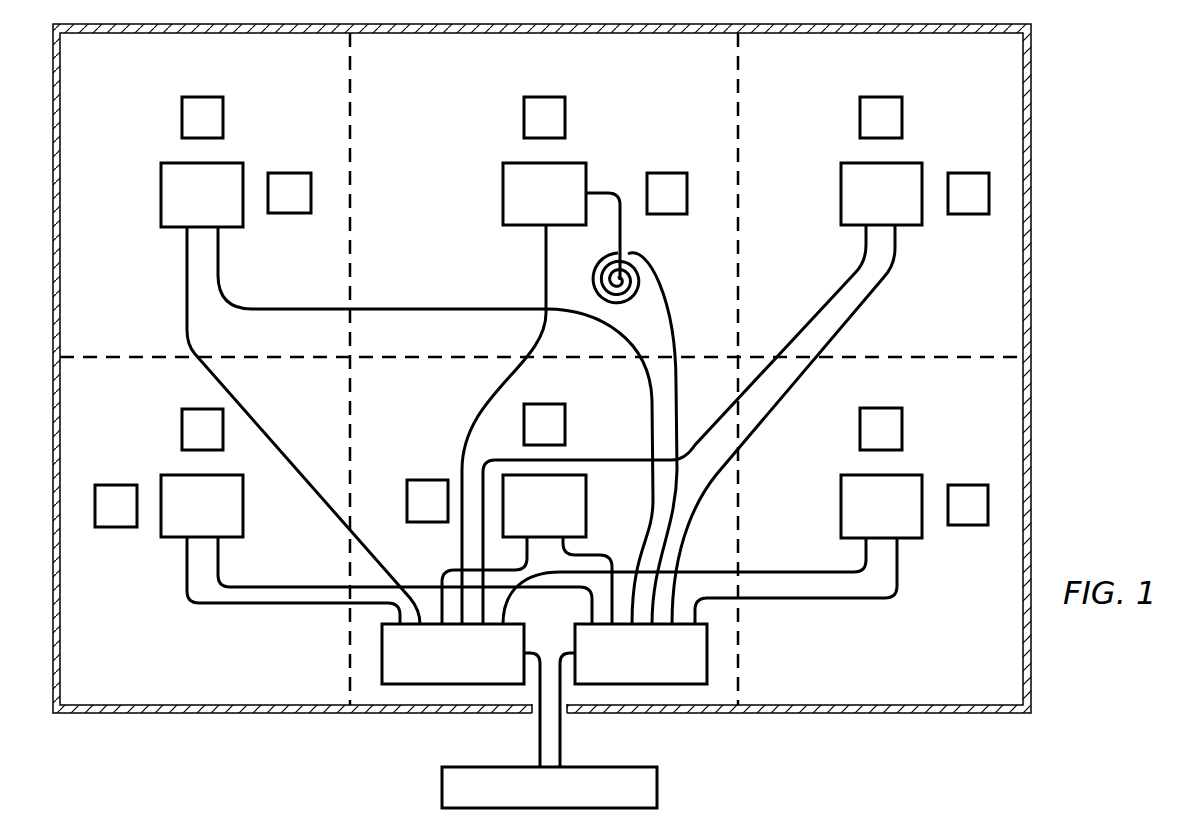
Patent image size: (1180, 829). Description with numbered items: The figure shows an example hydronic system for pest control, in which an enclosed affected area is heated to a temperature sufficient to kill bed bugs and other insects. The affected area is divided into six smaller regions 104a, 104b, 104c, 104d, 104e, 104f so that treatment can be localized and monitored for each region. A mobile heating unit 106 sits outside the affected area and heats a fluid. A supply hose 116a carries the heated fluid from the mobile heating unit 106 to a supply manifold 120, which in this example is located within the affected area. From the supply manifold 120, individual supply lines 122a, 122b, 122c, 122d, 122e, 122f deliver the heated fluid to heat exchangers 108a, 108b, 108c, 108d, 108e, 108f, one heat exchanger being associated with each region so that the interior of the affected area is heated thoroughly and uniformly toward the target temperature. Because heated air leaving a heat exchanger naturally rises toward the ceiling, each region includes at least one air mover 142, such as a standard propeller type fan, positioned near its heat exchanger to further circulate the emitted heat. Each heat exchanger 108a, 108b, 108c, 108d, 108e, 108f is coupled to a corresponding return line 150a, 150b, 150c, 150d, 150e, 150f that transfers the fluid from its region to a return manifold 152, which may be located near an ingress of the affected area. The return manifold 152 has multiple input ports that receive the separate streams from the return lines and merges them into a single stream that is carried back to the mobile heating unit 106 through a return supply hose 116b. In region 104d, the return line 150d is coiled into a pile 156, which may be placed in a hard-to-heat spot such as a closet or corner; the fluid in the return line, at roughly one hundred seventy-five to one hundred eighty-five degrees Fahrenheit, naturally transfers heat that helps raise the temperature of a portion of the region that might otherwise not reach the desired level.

The region 104a is at (447, 400).
The region 104b is at (178, 658).
The region 104c is at (304, 88).
The region 104d is at (466, 134).
The region 104e is at (828, 128).
The region 104f is at (957, 657).
The mobile heating unit 106 is at (442, 788).
The heat exchanger 108a is at (520, 517).
The heat exchanger 108b is at (178, 517).
The heat exchanger 108c is at (178, 207).
The heat exchanger 108d is at (520, 205).
The heat exchanger 108e is at (857, 205).
The heat exchanger 108f is at (859, 517).
The supply hose 116a is at (538, 735).
The return supply hose 116b is at (562, 730).
The supply manifold 120 is at (434, 668).
The supply line 122a is at (448, 572).
The supply line 122b is at (258, 606).
The supply line 122c is at (187, 292).
The supply line 122d is at (546, 282).
The supply line 122e is at (832, 292).
The supply line 122f is at (778, 571).
The air mover 142 is at (182, 115).
The return line 150a is at (594, 552).
The return line 150b is at (298, 585).
The return line 150c is at (418, 308).
The return line 150d is at (604, 192).
The return line 150e is at (896, 264).
The return line 150f is at (830, 600).
The return manifold 152 is at (622, 668).
The pile of coiled return line 156 is at (640, 250).